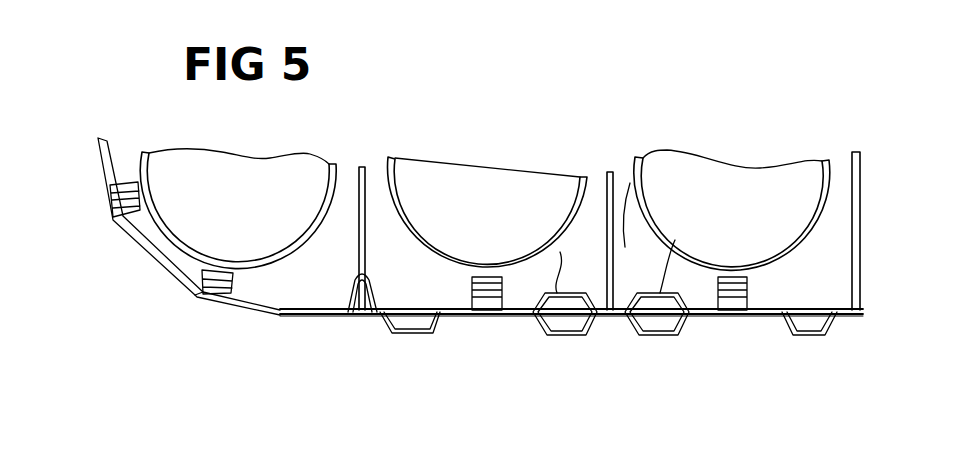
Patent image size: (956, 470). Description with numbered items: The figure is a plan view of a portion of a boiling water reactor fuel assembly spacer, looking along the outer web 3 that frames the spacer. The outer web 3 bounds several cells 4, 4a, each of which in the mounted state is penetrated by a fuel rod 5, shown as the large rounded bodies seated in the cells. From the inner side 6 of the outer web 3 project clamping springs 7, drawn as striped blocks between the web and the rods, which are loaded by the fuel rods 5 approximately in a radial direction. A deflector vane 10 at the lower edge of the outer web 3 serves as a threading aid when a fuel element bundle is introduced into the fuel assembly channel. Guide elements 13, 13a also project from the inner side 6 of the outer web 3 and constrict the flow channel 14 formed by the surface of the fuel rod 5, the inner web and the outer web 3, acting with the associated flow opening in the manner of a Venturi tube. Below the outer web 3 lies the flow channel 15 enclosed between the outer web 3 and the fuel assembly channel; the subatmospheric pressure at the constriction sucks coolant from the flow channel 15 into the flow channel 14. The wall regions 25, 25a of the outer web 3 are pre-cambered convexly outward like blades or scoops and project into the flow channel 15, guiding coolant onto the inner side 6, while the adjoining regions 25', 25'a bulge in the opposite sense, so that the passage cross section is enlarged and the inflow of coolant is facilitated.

The outer web 3 is at (297, 313).
The cell 4 is at (363, 182).
The receptacle bowl 4a is at (807, 148).
The fuel rod 5 is at (393, 200).
The inner side 6 is at (270, 300).
The clamping spring 7 is at (122, 199).
The deflector vane 10 is at (347, 290).
The guide element 13 is at (560, 252).
The spring element 13a is at (675, 240).
The flow channel 14 is at (588, 243).
The flow channel 15 is at (695, 332).
The wall region 25 is at (565, 348).
The recess 25' is at (410, 355).
The wall region 25a is at (657, 337).
The recess 25'a is at (815, 356).